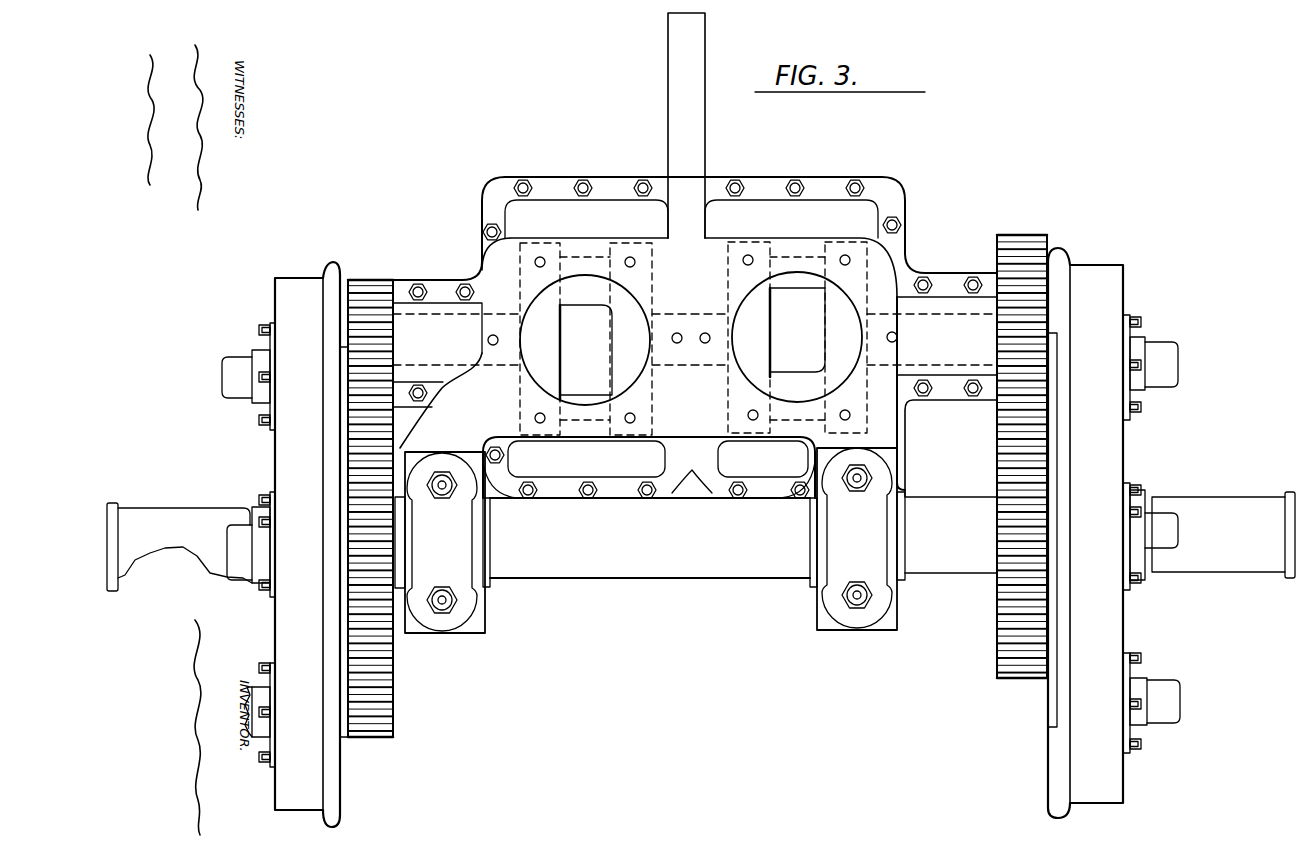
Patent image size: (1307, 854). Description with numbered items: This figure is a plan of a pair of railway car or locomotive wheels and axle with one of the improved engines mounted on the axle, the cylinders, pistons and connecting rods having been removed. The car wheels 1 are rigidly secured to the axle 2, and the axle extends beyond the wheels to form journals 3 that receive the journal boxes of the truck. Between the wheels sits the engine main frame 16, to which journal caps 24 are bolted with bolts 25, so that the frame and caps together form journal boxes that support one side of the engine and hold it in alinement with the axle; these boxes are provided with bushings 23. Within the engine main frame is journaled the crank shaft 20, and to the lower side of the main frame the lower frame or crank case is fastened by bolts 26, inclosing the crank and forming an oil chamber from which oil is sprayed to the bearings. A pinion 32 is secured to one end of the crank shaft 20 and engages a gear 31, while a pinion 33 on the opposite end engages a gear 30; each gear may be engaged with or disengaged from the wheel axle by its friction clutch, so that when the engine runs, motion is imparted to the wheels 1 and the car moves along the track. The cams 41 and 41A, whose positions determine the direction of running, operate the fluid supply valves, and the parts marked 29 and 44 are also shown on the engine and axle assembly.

The car wheels 1 is at (343, 808).
The axle 2 is at (668, 578).
The journals 3 is at (158, 509).
The engine main frame 16 is at (938, 226).
The crank shaft 20 is at (563, 350).
The bushings 23 is at (488, 592).
The journal caps 24 is at (487, 632).
The bolts 25 is at (450, 493).
The bolts 26 is at (568, 158).
The motor shaft 29 is at (708, 123).
The gear 30 is at (398, 746).
The gear 31 is at (1007, 680).
The pinion 32 is at (1003, 237).
The pinion 33 is at (368, 280).
The cam 41 is at (527, 340).
The cam 41A is at (640, 355).
The axle collar 44 is at (352, 733).